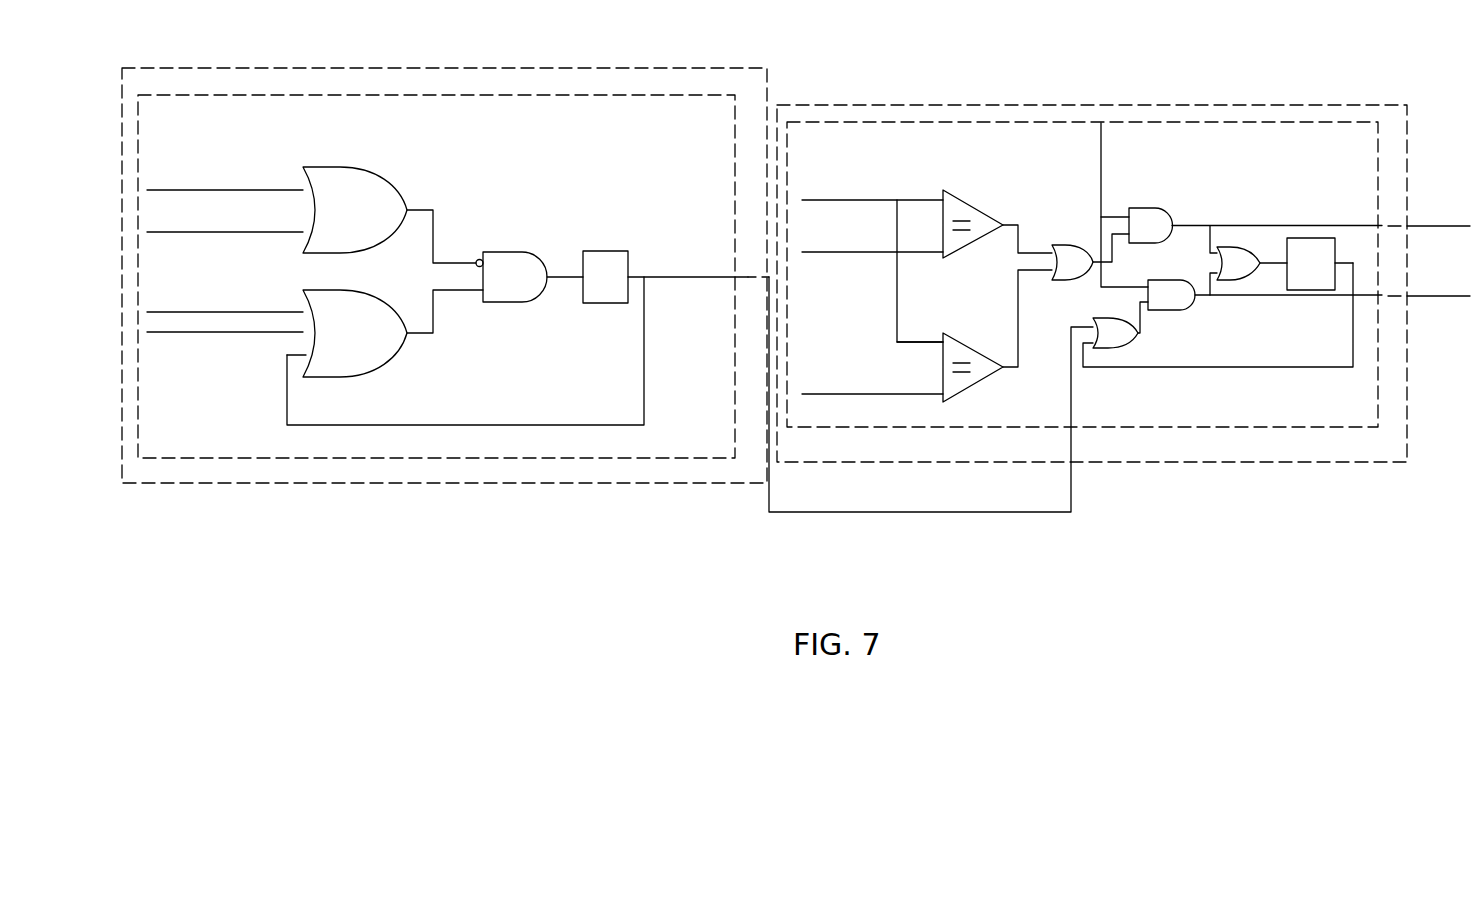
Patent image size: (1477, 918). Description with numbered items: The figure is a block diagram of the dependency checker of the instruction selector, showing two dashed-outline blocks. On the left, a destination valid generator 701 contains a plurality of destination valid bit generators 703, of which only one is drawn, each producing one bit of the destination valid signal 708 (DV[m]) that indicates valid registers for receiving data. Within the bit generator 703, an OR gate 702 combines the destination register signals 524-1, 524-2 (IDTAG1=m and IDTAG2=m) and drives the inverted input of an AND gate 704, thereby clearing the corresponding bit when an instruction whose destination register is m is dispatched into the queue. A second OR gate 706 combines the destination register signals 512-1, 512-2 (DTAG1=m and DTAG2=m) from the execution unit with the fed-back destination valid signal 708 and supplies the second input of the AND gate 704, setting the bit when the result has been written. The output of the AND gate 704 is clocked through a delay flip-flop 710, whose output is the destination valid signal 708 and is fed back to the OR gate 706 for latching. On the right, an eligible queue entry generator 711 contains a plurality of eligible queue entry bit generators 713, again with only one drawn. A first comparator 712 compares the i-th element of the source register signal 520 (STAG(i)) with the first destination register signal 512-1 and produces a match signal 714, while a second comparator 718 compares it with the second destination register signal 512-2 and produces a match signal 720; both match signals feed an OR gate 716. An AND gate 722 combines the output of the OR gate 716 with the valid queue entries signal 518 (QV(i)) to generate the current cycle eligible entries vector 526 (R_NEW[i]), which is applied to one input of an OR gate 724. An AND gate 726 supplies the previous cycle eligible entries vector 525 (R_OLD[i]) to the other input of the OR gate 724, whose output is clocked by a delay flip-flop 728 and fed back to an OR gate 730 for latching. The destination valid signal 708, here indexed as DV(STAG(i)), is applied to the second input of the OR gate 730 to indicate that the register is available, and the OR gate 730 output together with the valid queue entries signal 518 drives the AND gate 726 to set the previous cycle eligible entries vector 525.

The destination valid generator 701 is at (455, 68).
The destination valid bit generator 703 is at (455, 95).
The OR gate 702 is at (388, 188).
The AND gate 704 is at (505, 252).
The OR gate 706 is at (385, 358).
The destination valid signal 708 is at (677, 281).
The delay flip-flop 710 is at (608, 251).
The destination register signal IDTAG1 524-1 is at (157, 190).
The destination register signal IDTAG2 524-2 is at (160, 232).
The first destination register signal DTAG1 512-1 is at (157, 312).
The second destination register signal DTAG2 512-2 is at (157, 334).
The eligible queue entry generator 711 is at (1235, 108).
The eligible queue entry bit generator 713 is at (1280, 123).
The first comparator 712 is at (968, 206).
The match signal 714 is at (1018, 225).
The OR gate 716 is at (1078, 280).
The second comparator 718 is at (968, 345).
The match signal 720 is at (1010, 372).
The AND gate 722 is at (1150, 208).
The OR gate 724 is at (1225, 250).
The AND gate 726 is at (1180, 312).
The delay flip-flop 728 is at (1337, 265).
The OR gate 730 is at (1118, 346).
The valid queue entries signal 518 is at (1101, 140).
The source register signal 520 is at (887, 202).
The current cycle eligible entries vector 526 is at (1365, 225).
The previous cycle eligible entries vector 525 is at (1350, 300).